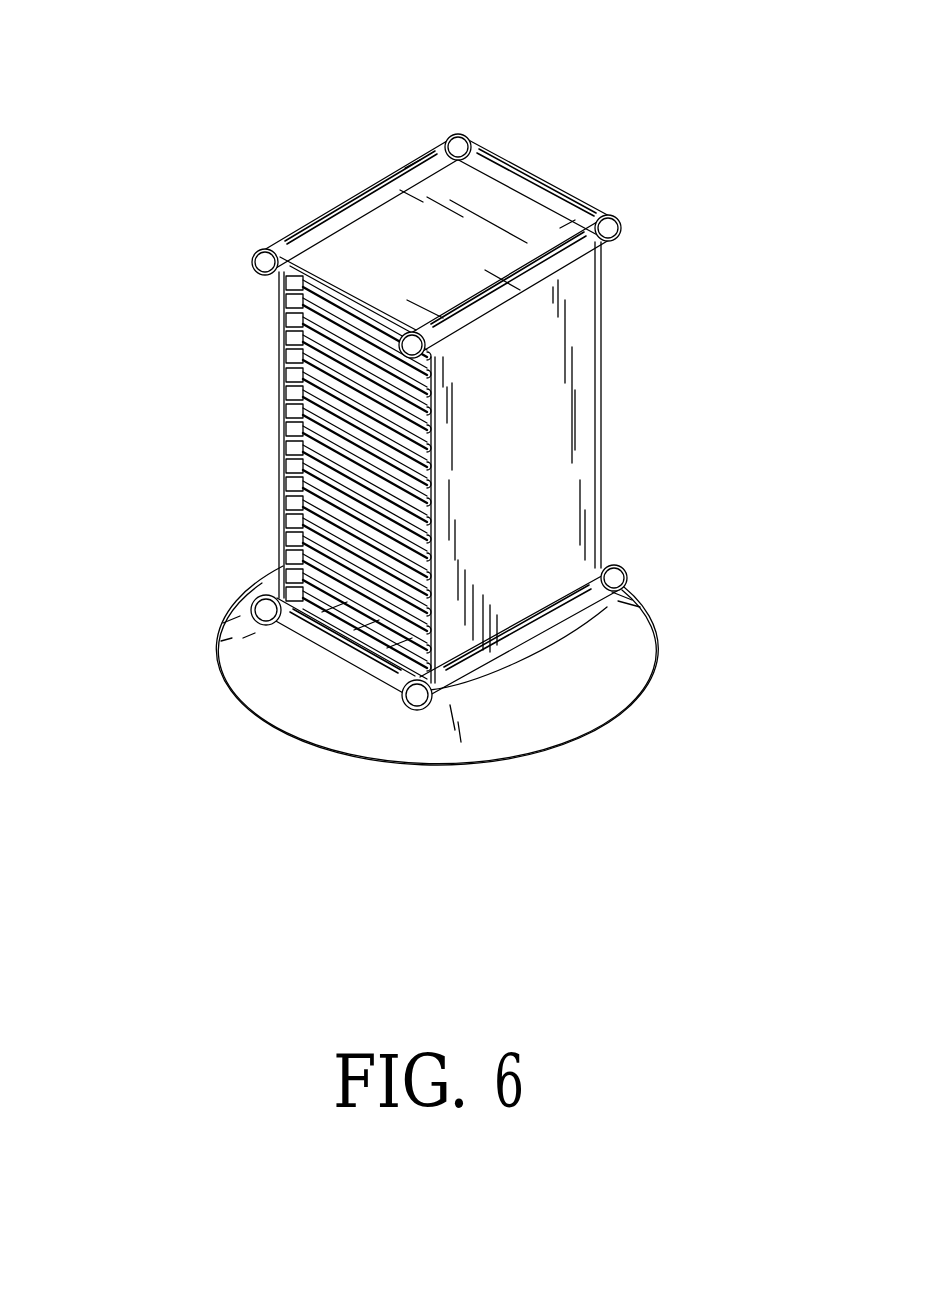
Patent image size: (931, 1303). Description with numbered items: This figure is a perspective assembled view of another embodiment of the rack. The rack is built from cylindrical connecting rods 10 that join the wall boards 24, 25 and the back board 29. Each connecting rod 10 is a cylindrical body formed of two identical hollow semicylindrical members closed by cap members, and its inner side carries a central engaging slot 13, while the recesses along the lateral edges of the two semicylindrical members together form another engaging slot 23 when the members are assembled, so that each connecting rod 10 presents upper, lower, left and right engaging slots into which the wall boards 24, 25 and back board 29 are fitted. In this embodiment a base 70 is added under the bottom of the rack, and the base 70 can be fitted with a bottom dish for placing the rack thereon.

The connecting rod 10 is at (339, 200).
The engaging slot 13 is at (590, 271).
The engaging slot 23 is at (413, 158).
The wall board 24 is at (280, 398).
The wall board 25 is at (505, 188).
The back board 29 is at (602, 418).
The base 70 is at (635, 654).